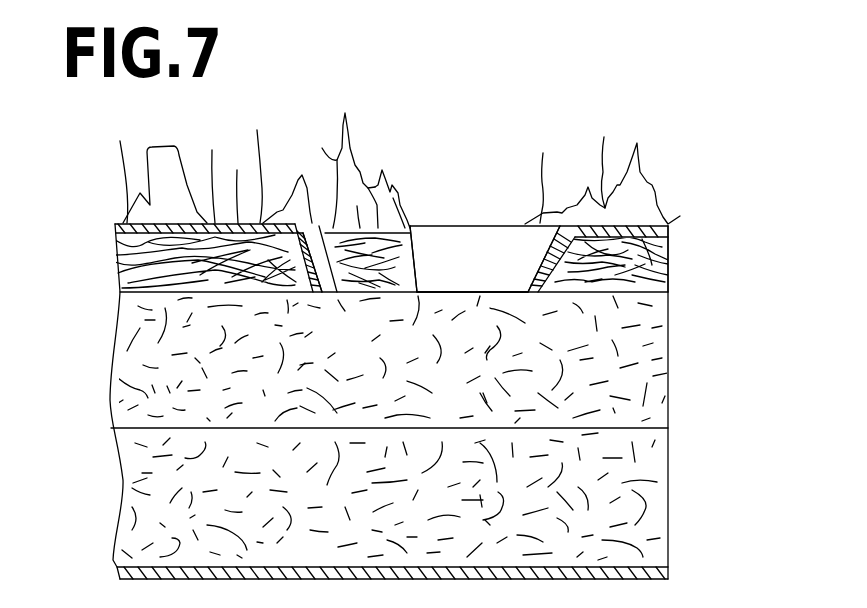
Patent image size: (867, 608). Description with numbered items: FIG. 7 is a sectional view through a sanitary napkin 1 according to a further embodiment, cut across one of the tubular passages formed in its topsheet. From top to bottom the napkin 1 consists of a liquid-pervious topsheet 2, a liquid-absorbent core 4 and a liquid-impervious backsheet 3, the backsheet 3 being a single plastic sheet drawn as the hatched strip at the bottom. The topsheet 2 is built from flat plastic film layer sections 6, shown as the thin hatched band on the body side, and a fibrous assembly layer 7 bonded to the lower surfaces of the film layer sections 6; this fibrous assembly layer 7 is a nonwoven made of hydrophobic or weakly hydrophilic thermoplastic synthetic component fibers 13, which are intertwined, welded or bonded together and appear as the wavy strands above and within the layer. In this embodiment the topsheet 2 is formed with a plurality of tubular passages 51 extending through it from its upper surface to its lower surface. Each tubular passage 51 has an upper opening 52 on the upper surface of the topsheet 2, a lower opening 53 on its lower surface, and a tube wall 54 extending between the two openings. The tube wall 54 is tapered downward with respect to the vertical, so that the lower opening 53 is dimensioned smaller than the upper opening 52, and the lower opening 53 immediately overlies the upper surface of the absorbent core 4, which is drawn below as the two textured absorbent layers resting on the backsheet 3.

The sanitary napkin 1 is at (573, 90).
The liquid-pervious topsheet 2 is at (728, 190).
The liquid-impervious backsheet 3 is at (655, 573).
The liquid-absorbent core 4 is at (647, 510).
The flat plastic film layer sections 6 is at (670, 226).
The fibrous assembly layer 7 is at (670, 260).
The component fibers 13 is at (604, 137).
The tubular passages 51 is at (482, 253).
The upper opening 52 is at (438, 233).
The lower opening 53 is at (459, 287).
The tube wall 54 is at (335, 293).